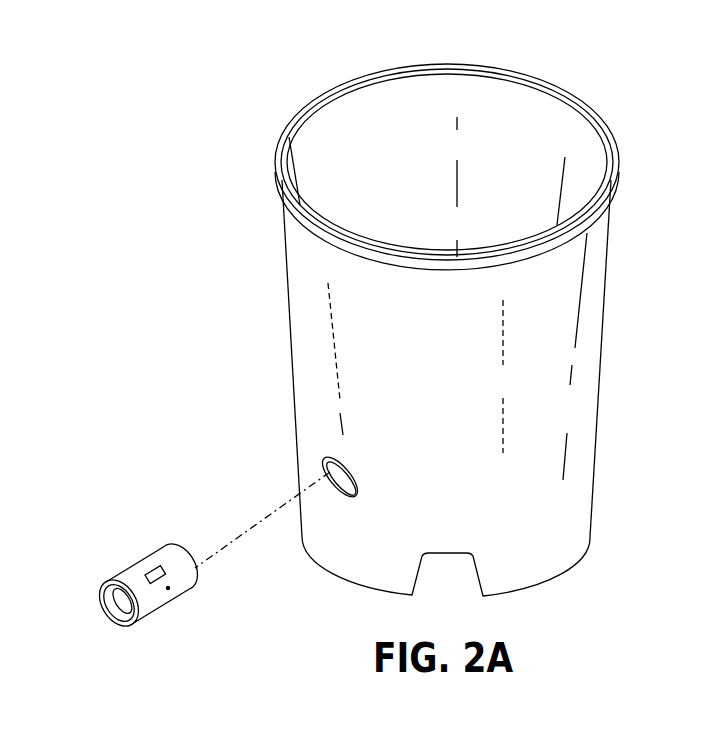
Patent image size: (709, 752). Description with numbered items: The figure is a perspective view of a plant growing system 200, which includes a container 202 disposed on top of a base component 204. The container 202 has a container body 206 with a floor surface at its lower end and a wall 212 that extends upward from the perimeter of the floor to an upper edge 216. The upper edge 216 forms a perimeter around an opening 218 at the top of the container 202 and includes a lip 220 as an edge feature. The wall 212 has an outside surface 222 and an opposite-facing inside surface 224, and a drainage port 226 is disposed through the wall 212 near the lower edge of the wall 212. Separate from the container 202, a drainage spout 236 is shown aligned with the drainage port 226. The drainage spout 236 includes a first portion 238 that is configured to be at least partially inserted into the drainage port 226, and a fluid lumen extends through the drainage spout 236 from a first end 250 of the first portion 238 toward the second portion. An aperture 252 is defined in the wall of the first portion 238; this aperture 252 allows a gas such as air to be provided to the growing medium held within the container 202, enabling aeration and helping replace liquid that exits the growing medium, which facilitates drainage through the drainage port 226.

The plant growing system 200 is at (363, 357).
The container 202 is at (285, 322).
The base component 204 is at (557, 579).
The container body 206 is at (600, 448).
The wall 212 is at (456, 331).
The upper edge 216 is at (485, 147).
The opening 218 is at (500, 110).
The lip 220 is at (598, 210).
The outside surface 222 is at (583, 405).
The inside surface 224 is at (343, 120).
The drainage port 226 is at (343, 492).
The drainage spout 236 is at (181, 580).
The first portion 238 is at (153, 572).
The first end 250 is at (195, 585).
The aperture 252 is at (142, 565).